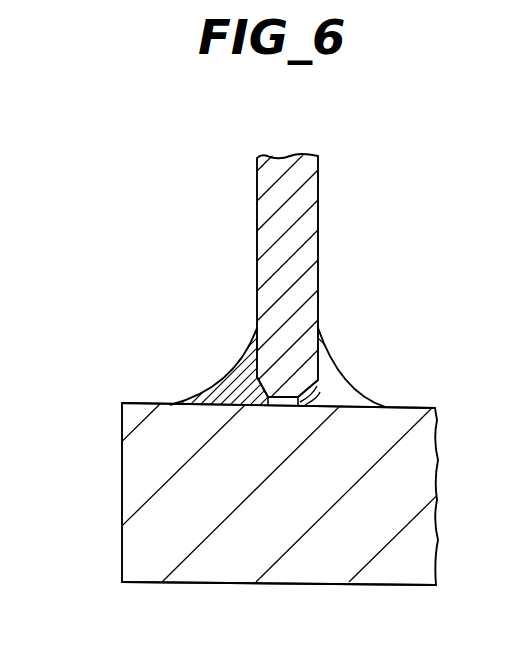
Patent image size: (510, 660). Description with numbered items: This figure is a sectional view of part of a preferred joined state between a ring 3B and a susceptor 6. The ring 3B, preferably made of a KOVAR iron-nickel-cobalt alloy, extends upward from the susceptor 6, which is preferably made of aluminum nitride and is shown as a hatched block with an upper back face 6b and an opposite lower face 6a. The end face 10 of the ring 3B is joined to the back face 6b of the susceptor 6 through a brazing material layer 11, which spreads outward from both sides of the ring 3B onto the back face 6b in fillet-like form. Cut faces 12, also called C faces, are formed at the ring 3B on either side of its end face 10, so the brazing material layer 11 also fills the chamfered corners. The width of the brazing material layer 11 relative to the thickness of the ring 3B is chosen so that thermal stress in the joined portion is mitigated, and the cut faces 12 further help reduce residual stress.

The ring 3B is at (287, 215).
The susceptor 6 is at (128, 466).
The lower surface of circuit board 6a is at (317, 584).
The back face 6b is at (148, 403).
The end face 10 is at (280, 398).
The brazing material layer 11 is at (233, 372).
The cut face 12 is at (235, 404).